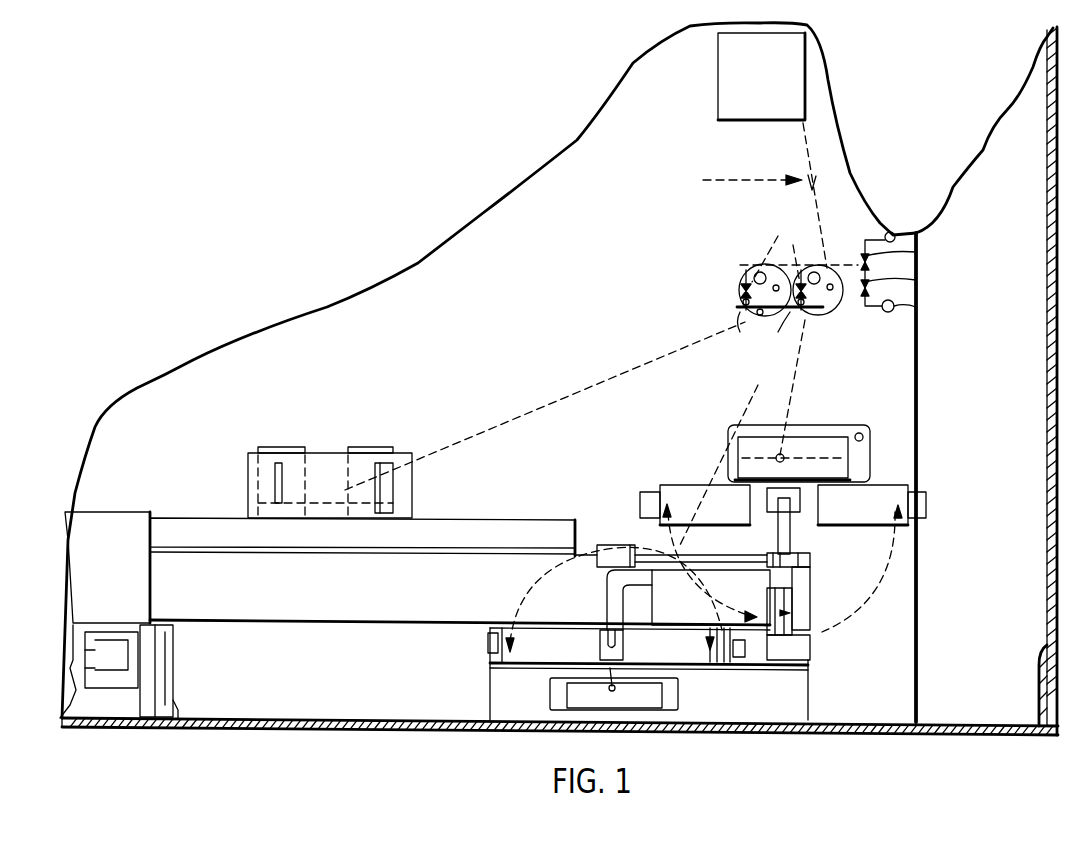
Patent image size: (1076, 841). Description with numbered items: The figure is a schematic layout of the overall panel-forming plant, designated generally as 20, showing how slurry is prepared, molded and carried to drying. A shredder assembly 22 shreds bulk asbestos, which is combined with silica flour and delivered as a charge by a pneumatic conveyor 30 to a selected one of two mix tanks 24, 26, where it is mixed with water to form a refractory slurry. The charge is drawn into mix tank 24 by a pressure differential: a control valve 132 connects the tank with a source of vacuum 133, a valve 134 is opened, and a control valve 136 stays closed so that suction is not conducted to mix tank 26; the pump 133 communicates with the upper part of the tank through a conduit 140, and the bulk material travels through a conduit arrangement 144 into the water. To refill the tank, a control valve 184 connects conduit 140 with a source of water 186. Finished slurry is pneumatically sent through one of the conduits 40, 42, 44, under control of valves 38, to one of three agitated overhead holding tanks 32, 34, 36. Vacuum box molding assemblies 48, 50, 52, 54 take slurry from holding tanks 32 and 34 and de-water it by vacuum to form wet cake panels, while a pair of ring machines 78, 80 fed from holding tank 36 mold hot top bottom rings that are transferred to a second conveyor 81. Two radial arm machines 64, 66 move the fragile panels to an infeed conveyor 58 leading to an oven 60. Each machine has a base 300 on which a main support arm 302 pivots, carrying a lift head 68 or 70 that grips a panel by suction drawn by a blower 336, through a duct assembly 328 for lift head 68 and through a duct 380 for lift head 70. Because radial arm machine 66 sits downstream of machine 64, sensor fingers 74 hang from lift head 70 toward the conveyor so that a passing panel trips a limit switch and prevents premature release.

The housing 20 is at (476, 270).
The shredder assembly 22 is at (718, 77).
The mix tank 24 is at (743, 293).
The mix tank 26 is at (833, 310).
The pneumatic conveyor 30 is at (752, 195).
The overhead holding tank 32 is at (804, 447).
The overhead holding tank 34 is at (603, 702).
The overhead holding tank 36 is at (322, 453).
The valves 38 is at (808, 312).
The conduit 40 is at (795, 395).
The conduit 42 is at (756, 384).
The conduit 44 is at (613, 380).
The vacuum box molding assembly 48 is at (870, 495).
The vacuum box molding assembly 50 is at (692, 474).
The vacuum box molding assembly 52 is at (683, 653).
The vacuum box molding assembly 54 is at (500, 652).
The infeed conveyor 58 is at (325, 612).
The oven 60 is at (120, 517).
The radial arm machine 64 is at (802, 546).
The radial arm machine 66 is at (595, 615).
The lift head 68 is at (808, 562).
The lift head 70 is at (606, 560).
The sensor fingers 74 is at (640, 582).
The ring machine 78 is at (392, 453).
The ring machine 80 is at (290, 424).
The second conveyor 81 is at (530, 498).
The control valve 132 is at (917, 255).
The source of vacuum 133 is at (912, 198).
The valve 134 is at (748, 280).
The control valve 136 is at (818, 266).
The conduit 140 is at (763, 248).
The conduit arrangement 144 is at (798, 212).
The control valve 184 is at (917, 282).
The source of water 186 is at (917, 309).
The base 300 is at (795, 496).
The main support arm 302 is at (778, 537).
The duct assembly 328 is at (800, 606).
The blower 336 is at (805, 640).
The duct 380 is at (722, 575).